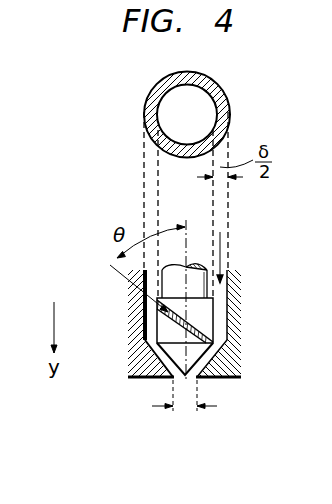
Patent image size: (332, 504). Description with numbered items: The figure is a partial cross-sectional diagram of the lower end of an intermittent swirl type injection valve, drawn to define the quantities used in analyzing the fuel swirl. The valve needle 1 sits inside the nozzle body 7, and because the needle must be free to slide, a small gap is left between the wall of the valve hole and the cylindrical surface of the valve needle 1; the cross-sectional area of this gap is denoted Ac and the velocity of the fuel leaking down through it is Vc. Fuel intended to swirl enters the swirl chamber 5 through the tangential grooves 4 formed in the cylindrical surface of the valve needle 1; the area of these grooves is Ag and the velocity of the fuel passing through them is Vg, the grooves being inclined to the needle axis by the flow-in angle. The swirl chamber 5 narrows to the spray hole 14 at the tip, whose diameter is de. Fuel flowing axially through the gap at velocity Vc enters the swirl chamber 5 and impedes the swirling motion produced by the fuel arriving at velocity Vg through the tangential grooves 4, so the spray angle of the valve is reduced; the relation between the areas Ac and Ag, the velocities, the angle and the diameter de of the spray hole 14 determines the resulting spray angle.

The valve needle 1 is at (210, 312).
The tangential grooves 4 is at (202, 327).
The swirl chamber 5 is at (162, 357).
The nozzle body 7 is at (134, 326).
The spray hole 14 is at (192, 376).
The gap area Ac is at (228, 110).
The tangential passage area Ag is at (230, 350).
The gap fuel velocity Vc is at (222, 253).
The tangential passage fuel velocity Vg is at (131, 283).
The spray hole diameter de is at (184, 418).